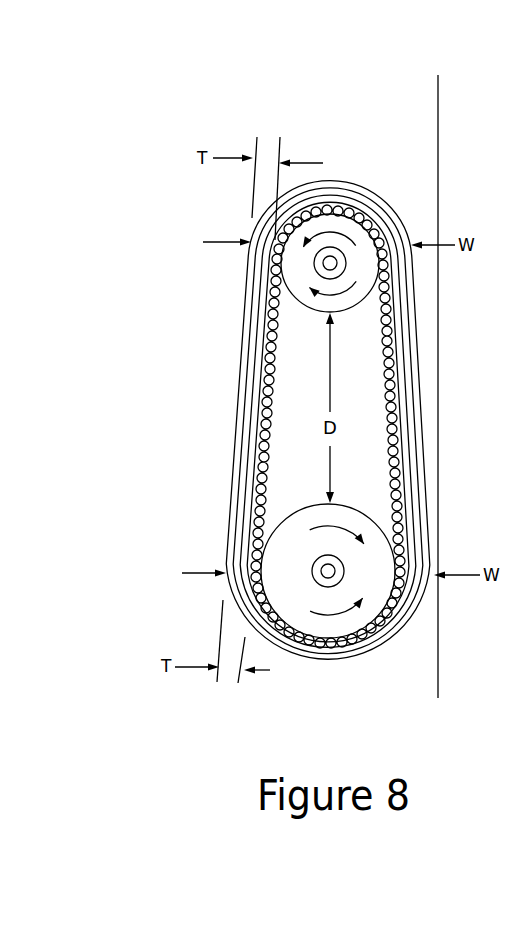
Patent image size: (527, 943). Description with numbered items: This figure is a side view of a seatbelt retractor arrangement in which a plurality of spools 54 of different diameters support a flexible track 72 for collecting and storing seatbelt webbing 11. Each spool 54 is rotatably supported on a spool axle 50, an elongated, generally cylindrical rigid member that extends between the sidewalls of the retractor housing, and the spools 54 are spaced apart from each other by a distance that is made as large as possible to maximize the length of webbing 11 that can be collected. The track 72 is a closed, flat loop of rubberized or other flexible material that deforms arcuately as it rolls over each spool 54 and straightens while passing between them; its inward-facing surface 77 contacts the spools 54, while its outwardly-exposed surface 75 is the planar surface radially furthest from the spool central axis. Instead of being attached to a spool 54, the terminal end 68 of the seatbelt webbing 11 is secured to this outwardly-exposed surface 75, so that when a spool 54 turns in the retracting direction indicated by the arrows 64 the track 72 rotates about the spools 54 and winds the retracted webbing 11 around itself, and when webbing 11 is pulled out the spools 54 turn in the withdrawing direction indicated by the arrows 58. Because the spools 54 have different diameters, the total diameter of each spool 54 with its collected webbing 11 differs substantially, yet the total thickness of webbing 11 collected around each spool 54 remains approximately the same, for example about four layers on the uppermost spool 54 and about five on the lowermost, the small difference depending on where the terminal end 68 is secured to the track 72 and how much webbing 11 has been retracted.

The seatbelt webbing 11 is at (442, 157).
The spool axle 50 is at (313, 265).
The spool 54 is at (362, 265).
The withdrawing direction arrows 58 is at (335, 232).
The retracting direction arrows 64 is at (343, 420).
The terminal end of the seatbelt webbing 68 is at (357, 420).
The flexible track 72 is at (328, 426).
The outwardly-exposed surface of the track 75 is at (405, 570).
The inward-facing surface of the track 77 is at (397, 467).